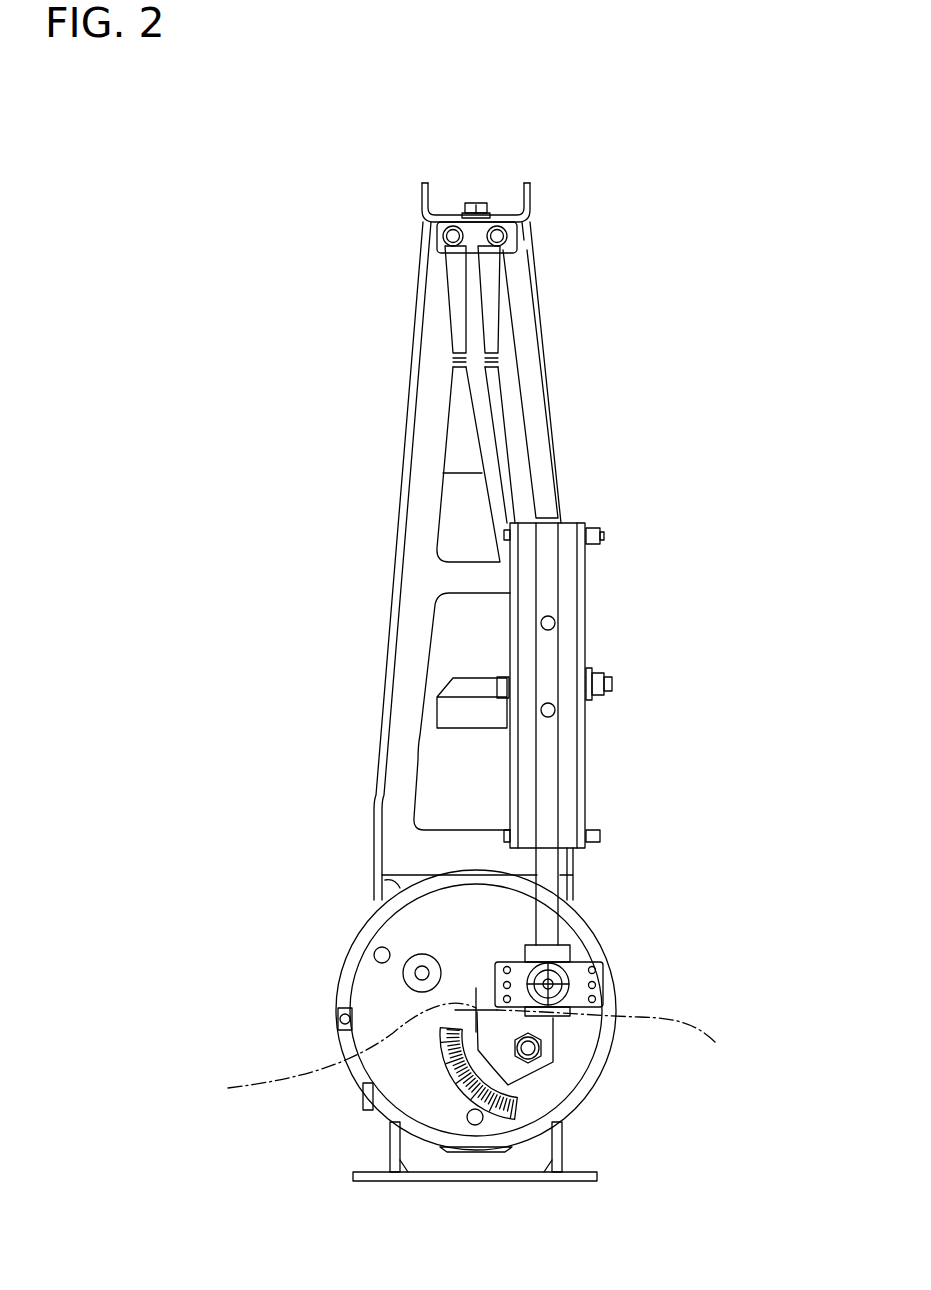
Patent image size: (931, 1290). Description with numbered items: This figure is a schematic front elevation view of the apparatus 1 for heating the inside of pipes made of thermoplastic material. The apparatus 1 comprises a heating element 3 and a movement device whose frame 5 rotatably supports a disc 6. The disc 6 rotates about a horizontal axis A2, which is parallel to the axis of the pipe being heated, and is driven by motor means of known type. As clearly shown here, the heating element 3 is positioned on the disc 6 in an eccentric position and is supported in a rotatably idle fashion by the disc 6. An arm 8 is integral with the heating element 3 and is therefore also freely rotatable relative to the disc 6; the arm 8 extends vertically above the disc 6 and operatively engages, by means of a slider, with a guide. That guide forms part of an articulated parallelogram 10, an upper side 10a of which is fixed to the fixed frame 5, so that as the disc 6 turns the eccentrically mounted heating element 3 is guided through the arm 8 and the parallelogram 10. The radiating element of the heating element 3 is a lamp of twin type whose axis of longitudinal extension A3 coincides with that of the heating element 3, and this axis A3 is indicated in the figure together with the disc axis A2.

The apparatus 1 is at (662, 432).
The heating element 3 is at (587, 958).
The frame 5 is at (416, 340).
The disc 6 is at (390, 1000).
The arm 8 is at (587, 637).
The articulated parallelogram 10 is at (525, 372).
The upper side 10a is at (476, 233).
The horizontal axis A2 is at (335, 1053).
The axis of longitudinal extension A3 is at (627, 1042).